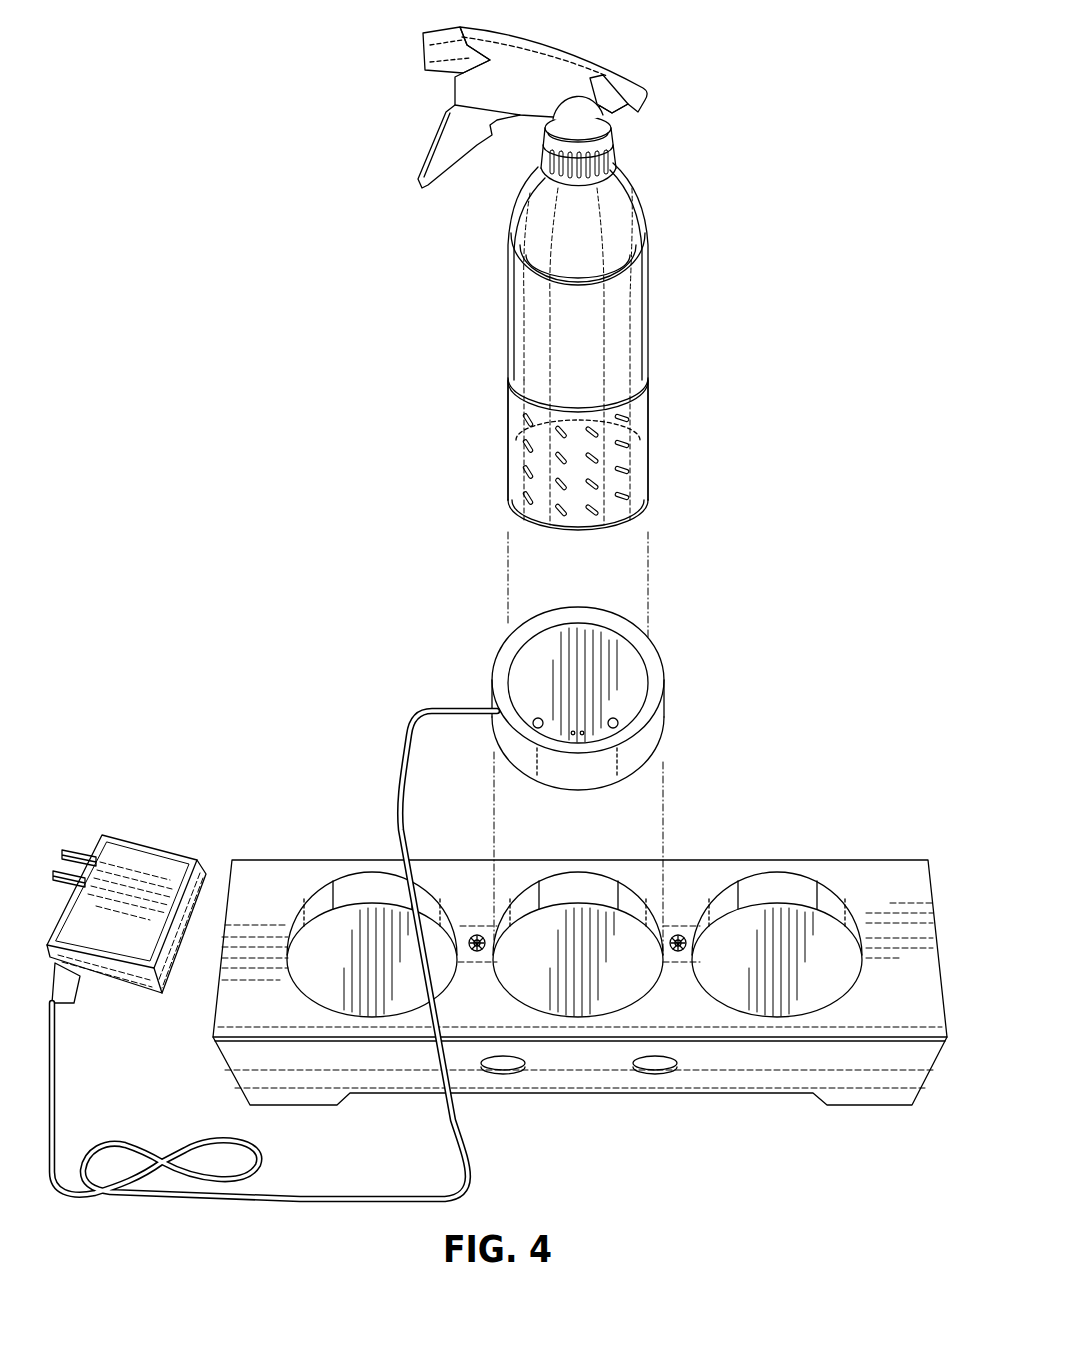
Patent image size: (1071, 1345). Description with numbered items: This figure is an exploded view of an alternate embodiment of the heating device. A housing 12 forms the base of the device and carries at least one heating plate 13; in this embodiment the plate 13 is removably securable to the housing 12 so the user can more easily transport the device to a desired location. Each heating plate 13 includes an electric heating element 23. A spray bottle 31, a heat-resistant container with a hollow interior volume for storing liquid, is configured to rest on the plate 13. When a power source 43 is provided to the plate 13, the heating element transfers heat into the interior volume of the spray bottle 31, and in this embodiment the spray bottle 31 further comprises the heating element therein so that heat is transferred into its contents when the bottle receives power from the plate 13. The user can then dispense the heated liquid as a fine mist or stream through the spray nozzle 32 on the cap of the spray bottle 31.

The housing 12 is at (306, 860).
The heating plate 13 is at (520, 652).
The electric heating element 23 is at (641, 515).
The spray bottle 31 is at (648, 290).
The spray nozzle 32 is at (422, 52).
The power source 43 is at (102, 835).